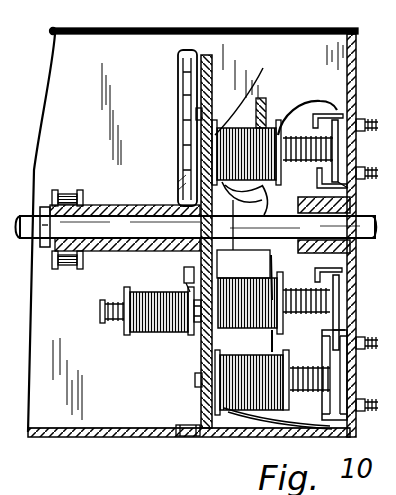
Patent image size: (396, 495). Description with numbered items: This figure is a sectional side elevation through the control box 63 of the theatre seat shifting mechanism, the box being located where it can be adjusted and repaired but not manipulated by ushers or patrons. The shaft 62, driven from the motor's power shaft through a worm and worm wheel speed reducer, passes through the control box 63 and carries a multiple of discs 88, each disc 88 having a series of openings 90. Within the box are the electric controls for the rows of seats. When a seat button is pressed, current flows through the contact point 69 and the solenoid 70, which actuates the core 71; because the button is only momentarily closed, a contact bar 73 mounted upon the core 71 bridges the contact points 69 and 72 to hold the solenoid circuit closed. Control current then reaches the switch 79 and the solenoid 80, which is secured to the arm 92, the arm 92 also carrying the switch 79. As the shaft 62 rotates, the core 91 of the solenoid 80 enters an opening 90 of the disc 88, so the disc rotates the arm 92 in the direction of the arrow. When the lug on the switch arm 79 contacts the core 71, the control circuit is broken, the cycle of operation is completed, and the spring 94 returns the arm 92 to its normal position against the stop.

The shaft 62 is at (117, 232).
The control box 63 is at (148, 407).
The contact point 69 is at (333, 108).
The solenoid 70 is at (280, 122).
The core 71 is at (297, 173).
The contact point 72 is at (347, 189).
The contact bar 73 is at (320, 130).
The switch 79 is at (180, 58).
The solenoid 80 is at (152, 327).
The disc 88 is at (245, 93).
The opening 90 is at (217, 328).
The core 91 is at (193, 334).
The arm 92 is at (193, 113).
The spring 94 is at (57, 270).